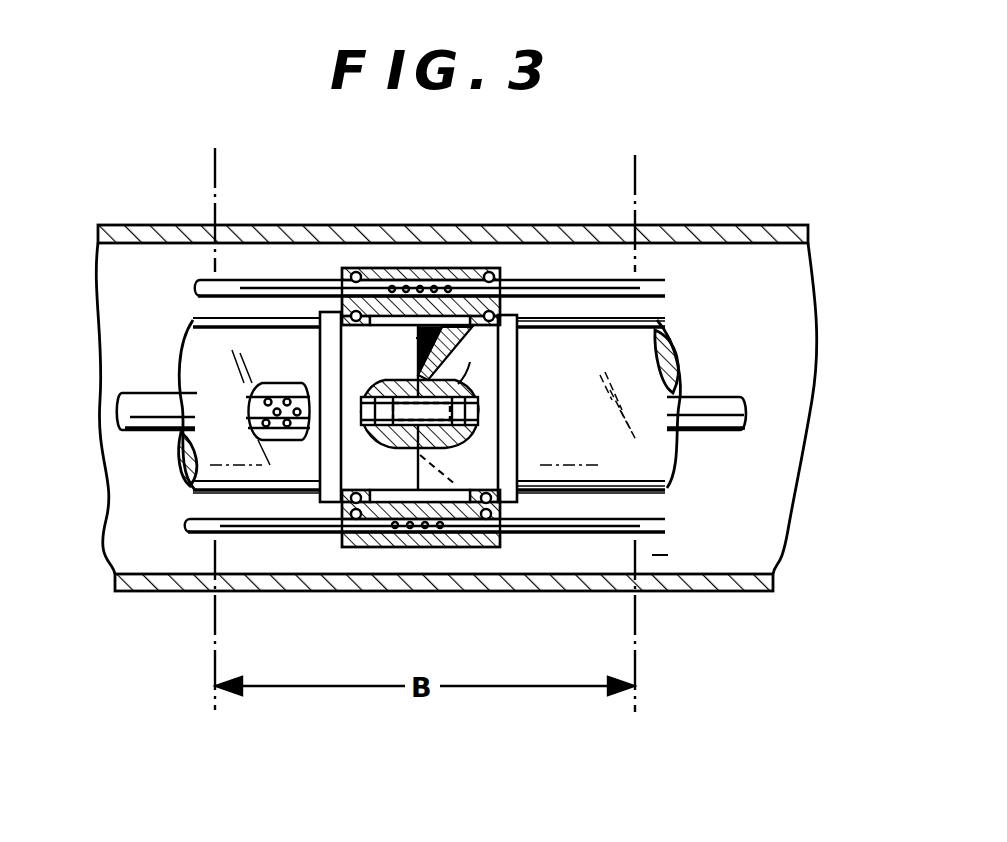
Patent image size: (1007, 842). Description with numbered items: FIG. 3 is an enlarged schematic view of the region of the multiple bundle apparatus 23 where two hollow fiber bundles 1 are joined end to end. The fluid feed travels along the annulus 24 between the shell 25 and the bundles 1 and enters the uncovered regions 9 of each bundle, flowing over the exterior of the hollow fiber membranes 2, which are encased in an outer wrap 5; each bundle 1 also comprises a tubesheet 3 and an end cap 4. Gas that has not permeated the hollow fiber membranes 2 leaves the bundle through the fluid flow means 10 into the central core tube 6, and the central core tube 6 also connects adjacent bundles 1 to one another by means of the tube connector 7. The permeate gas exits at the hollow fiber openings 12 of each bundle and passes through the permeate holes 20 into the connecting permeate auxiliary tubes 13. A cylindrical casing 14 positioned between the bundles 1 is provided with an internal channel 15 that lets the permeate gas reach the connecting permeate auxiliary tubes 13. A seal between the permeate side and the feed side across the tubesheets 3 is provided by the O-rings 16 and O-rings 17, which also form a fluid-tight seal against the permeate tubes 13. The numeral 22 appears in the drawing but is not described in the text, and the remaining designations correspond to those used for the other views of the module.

The hollow fiber bundle 1 is at (185, 458).
The hollow fiber membranes 2 is at (231, 470).
The tubesheet 3 is at (489, 472).
The end cap 4 is at (378, 468).
The outer wrap 5 is at (283, 492).
The central core tube 6 is at (703, 431).
The tube connector 7 is at (507, 314).
The uncovered region 9 is at (533, 323).
The fluid flow means 10 is at (272, 383).
The hollow fiber openings 12 is at (424, 338).
The connecting permeate auxiliary tube 13 is at (282, 280).
The cylindrical casing 14 is at (448, 270).
The internal channel 15 is at (430, 362).
The O-ring 16 is at (470, 362).
The O-ring 17 is at (479, 318).
The permeate holes 20 is at (410, 526).
The nut 22 is at (443, 432).
The multiple bundle apparatus 23 is at (151, 226).
The annulus 24 is at (659, 554).
The shell 25 is at (697, 591).